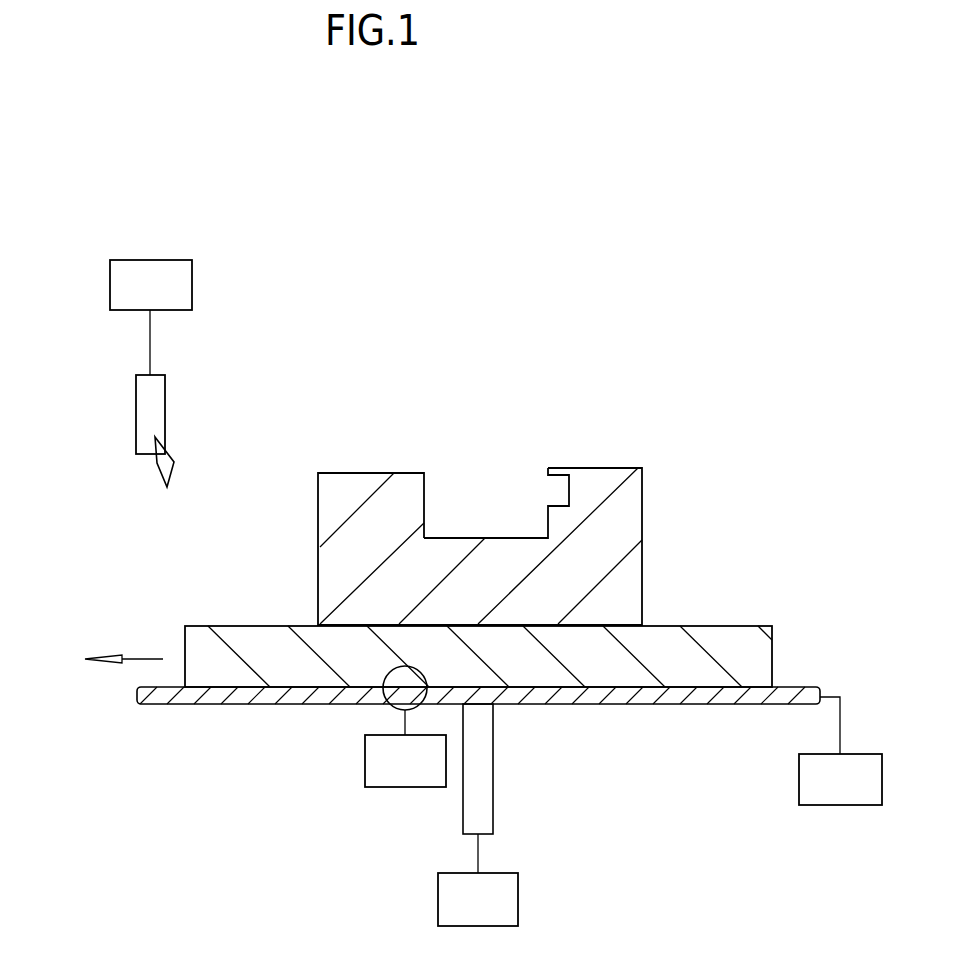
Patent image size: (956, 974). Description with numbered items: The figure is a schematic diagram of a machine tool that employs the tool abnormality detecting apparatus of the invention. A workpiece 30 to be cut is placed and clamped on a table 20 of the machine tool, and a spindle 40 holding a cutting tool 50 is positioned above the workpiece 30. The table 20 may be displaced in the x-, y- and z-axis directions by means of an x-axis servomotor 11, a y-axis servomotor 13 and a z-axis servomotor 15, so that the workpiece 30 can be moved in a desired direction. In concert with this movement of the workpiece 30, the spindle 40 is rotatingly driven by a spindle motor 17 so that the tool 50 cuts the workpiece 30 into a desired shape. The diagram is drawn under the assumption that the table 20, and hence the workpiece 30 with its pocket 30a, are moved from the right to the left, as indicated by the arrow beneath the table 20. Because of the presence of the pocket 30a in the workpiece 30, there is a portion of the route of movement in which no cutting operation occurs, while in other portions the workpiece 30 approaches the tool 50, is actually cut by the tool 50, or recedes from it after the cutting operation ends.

The x-axis servomotor 11 is at (365, 766).
The y-axis servomotor 13 is at (799, 778).
The z-axis servomotor 15 is at (437, 893).
The spindle motor 17 is at (192, 274).
The table 20 is at (763, 663).
The workpiece 30 is at (393, 503).
The pocket 30a is at (531, 482).
The spindle 40 is at (136, 382).
The cutting tool 50 is at (155, 462).